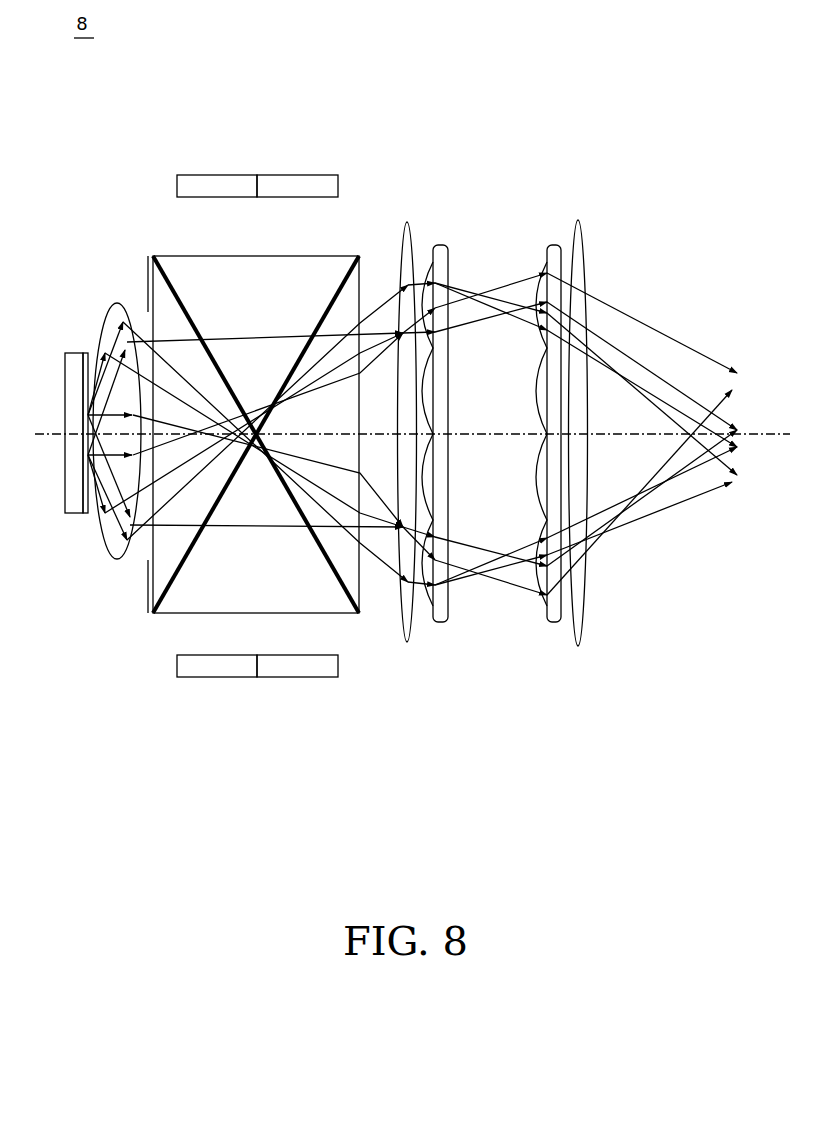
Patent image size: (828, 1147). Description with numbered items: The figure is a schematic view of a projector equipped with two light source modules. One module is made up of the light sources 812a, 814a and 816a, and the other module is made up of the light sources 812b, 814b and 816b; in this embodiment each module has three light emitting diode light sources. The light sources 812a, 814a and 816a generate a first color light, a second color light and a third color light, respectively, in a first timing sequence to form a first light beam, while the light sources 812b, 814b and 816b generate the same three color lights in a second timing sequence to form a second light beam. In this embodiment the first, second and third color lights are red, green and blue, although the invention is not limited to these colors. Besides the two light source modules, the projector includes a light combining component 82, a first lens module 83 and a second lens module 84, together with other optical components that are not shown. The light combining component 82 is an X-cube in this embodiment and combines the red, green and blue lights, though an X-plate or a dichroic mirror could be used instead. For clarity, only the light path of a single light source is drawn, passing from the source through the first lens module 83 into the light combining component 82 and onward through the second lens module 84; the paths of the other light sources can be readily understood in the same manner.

The light source 812a is at (73, 353).
The light source 812b is at (73, 514).
The first lens module 83 is at (124, 314).
The light combining component 82 is at (334, 256).
The light source 814a is at (288, 178).
The light source 814b is at (212, 186).
The light source 816a is at (210, 680).
The light source 816b is at (295, 682).
The second lens module 84 is at (406, 223).